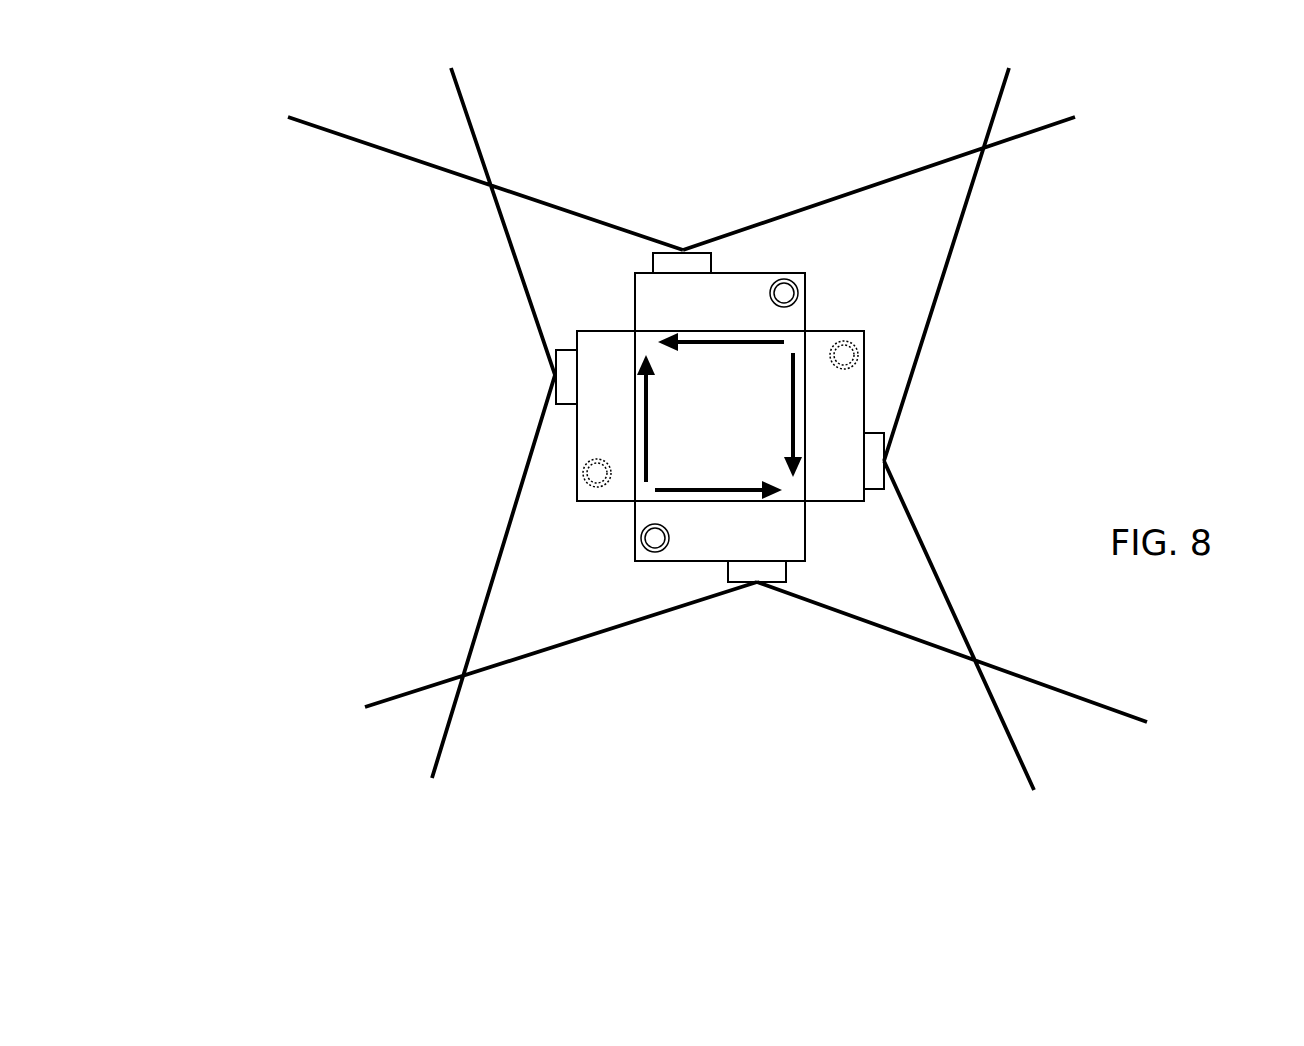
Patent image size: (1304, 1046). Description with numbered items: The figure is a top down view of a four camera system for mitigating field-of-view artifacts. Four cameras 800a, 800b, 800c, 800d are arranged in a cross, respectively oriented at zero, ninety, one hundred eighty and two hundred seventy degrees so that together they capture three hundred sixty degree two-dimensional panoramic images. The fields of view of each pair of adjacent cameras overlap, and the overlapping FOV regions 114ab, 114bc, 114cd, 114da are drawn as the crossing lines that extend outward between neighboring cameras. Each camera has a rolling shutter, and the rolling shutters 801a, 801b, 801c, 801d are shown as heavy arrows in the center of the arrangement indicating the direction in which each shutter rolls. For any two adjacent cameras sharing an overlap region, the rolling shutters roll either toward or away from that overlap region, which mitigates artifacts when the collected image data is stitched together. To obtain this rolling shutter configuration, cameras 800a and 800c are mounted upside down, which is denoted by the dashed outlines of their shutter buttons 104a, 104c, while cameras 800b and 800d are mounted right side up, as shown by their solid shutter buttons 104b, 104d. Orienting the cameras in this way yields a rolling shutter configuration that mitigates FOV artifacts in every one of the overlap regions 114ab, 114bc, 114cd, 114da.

The overlapping FOV region 114ab is at (293, 83).
The overlapping FOV region 114bc is at (1107, 98).
The overlapping FOV region 114cd is at (1145, 743).
The overlapping FOV region 114da is at (393, 739).
The shutter button 104a is at (584, 480).
The shutter button 104b is at (783, 280).
The shutter button 104c is at (851, 343).
The shutter button 104d is at (642, 545).
The camera 800a is at (595, 416).
The camera 800b is at (720, 292).
The camera 800c is at (844, 416).
The camera 800d is at (720, 541).
The rolling shutter 801a is at (652, 403).
The rolling shutter 801b is at (702, 346).
The rolling shutter 801c is at (790, 400).
The rolling shutter 801d is at (762, 482).